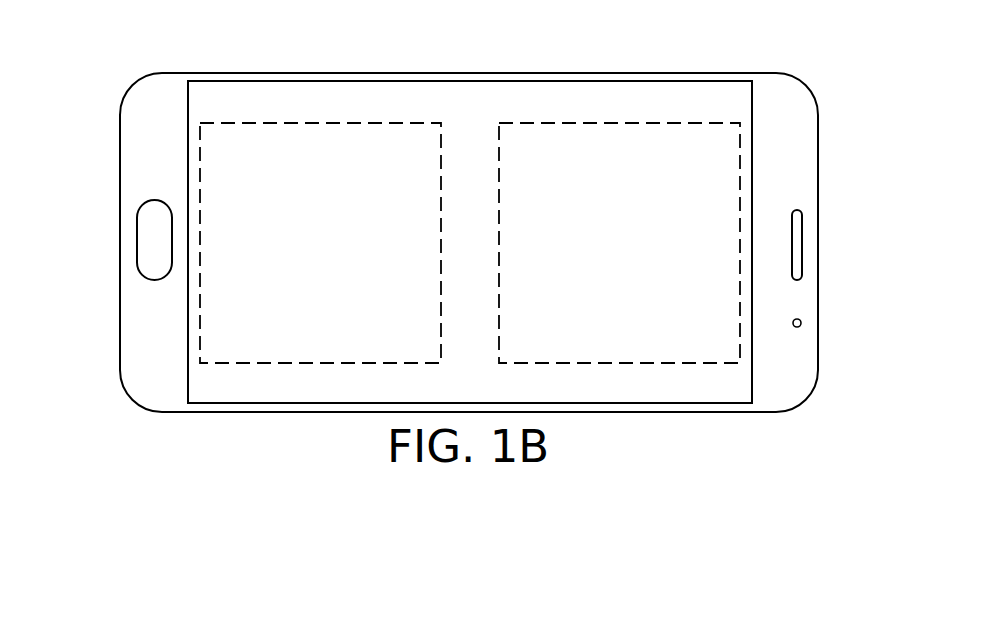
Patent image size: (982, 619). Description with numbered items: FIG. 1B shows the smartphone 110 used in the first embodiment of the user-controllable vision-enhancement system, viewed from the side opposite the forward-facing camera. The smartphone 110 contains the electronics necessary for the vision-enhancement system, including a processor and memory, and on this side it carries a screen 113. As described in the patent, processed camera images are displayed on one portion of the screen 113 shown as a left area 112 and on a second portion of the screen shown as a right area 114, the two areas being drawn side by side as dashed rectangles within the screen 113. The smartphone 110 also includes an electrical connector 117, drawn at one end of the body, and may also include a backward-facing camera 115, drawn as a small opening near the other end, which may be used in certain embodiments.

The smartphone 110 is at (245, 39).
The left area 112 is at (330, 122).
The screen 113 is at (488, 116).
The right area 114 is at (630, 122).
The backward-facing camera 115 is at (801, 326).
The electrical connector 117 is at (120, 242).